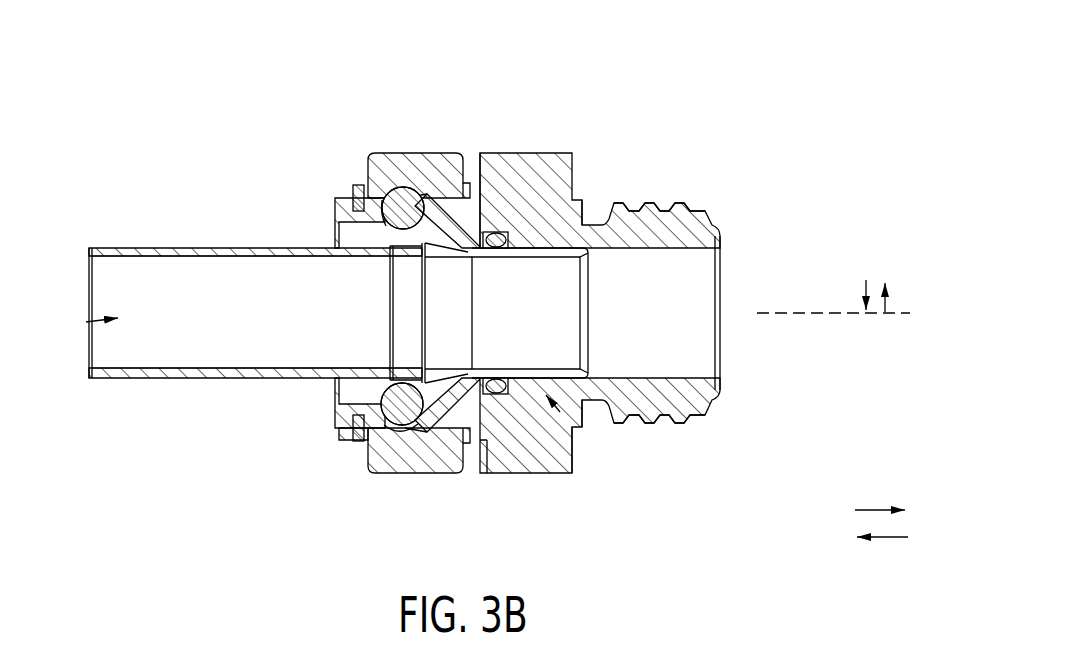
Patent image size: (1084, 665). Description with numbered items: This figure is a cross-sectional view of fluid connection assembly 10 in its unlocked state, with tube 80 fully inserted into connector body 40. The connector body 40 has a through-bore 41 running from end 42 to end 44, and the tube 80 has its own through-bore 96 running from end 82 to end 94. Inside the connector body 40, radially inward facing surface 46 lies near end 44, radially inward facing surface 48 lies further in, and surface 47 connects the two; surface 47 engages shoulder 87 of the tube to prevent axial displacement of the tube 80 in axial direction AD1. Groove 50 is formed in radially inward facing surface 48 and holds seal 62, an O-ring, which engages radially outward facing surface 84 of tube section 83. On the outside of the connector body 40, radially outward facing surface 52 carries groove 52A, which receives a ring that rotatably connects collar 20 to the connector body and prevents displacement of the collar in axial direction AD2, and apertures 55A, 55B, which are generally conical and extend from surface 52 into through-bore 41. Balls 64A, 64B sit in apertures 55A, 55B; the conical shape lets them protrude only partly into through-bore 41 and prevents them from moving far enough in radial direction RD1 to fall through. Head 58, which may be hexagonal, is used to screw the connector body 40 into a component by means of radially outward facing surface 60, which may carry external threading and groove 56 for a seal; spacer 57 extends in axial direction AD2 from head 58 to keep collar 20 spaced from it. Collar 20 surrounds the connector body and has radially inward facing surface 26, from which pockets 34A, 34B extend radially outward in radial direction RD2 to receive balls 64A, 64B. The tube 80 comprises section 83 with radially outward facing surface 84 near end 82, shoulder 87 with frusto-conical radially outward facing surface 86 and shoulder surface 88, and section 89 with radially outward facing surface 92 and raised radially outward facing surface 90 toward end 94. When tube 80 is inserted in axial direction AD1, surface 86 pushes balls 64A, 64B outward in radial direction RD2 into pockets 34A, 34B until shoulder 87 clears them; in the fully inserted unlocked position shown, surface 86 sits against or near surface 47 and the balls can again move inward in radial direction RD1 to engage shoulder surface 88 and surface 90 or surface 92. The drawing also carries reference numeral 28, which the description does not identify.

The fluid connection assembly 10 is at (114, 69).
The collar 20 is at (430, 156).
The radially inward facing surface 26 is at (365, 436).
The nut lower portion 28 is at (445, 473).
The pocket 34A is at (402, 440).
The pocket 34B is at (402, 187).
The connector body 40 is at (692, 223).
The through-bore 41 is at (684, 330).
The end 42 is at (722, 235).
The end 44 is at (333, 218).
The radially inward facing surface 46 is at (333, 385).
The surface 47 is at (517, 477).
The radially inward facing surface 48 is at (688, 425).
The groove 50 is at (518, 250).
The radially outward facing surface 52 is at (355, 190).
The groove 52A is at (353, 427).
The aperture 55A is at (425, 475).
The aperture 55B is at (448, 153).
The groove 56 is at (607, 227).
The spacer 57 is at (487, 158).
The head 58 is at (560, 152).
The radially outward facing surface 60 is at (672, 204).
The seal 62 is at (500, 234).
The ball 64A is at (400, 428).
The ball 64B is at (378, 162).
The tube 80 is at (125, 250).
The end 82 is at (587, 265).
The section 83 is at (578, 428).
The radially outward facing surface 84 is at (532, 262).
The radially outward facing surface 86 is at (450, 263).
The shoulder 87 is at (482, 477).
The shoulder surface 88 is at (420, 246).
The section 89 is at (187, 408).
The radially outward facing surface 90 is at (386, 268).
The radially outward facing surface 92 is at (170, 250).
The end 94 is at (88, 250).
The through-bore 96 is at (86, 322).
The radial direction RD1 is at (862, 292).
The radial direction RD2 is at (890, 300).
The axial direction AD1 is at (875, 508).
The axial direction AD2 is at (880, 538).